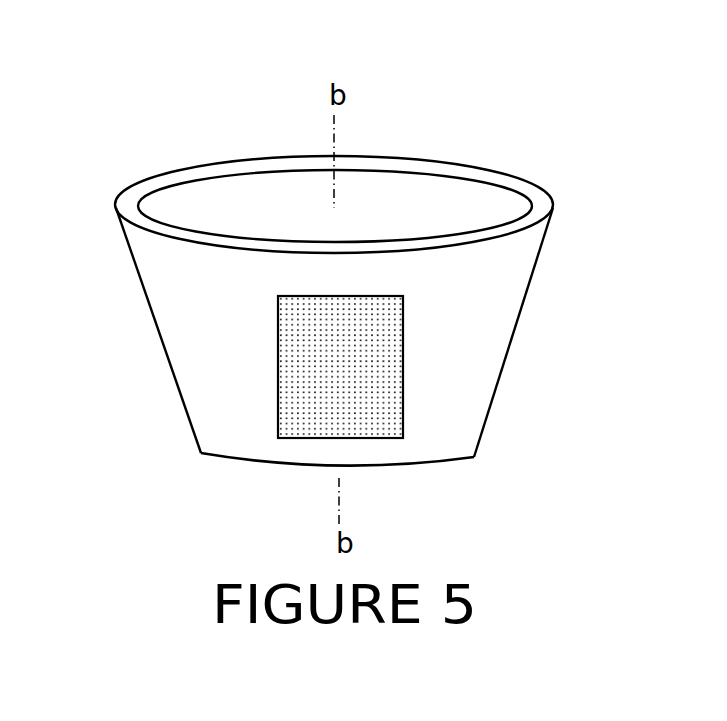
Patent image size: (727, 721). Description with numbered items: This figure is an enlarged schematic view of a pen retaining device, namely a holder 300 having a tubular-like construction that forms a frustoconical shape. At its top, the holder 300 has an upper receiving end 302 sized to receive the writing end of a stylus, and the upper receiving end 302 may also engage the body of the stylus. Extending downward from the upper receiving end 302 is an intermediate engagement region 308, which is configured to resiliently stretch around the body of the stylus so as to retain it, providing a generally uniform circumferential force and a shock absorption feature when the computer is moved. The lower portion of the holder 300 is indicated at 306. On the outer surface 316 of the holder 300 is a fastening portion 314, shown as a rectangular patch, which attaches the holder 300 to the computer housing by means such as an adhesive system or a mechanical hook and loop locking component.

The holder 300 is at (447, 101).
The upper receiving end 302 is at (550, 201).
The base 306 is at (198, 450).
The intermediate engagement region 308 is at (483, 375).
The fastening portion 314 is at (353, 376).
The outer surface 316 is at (240, 332).